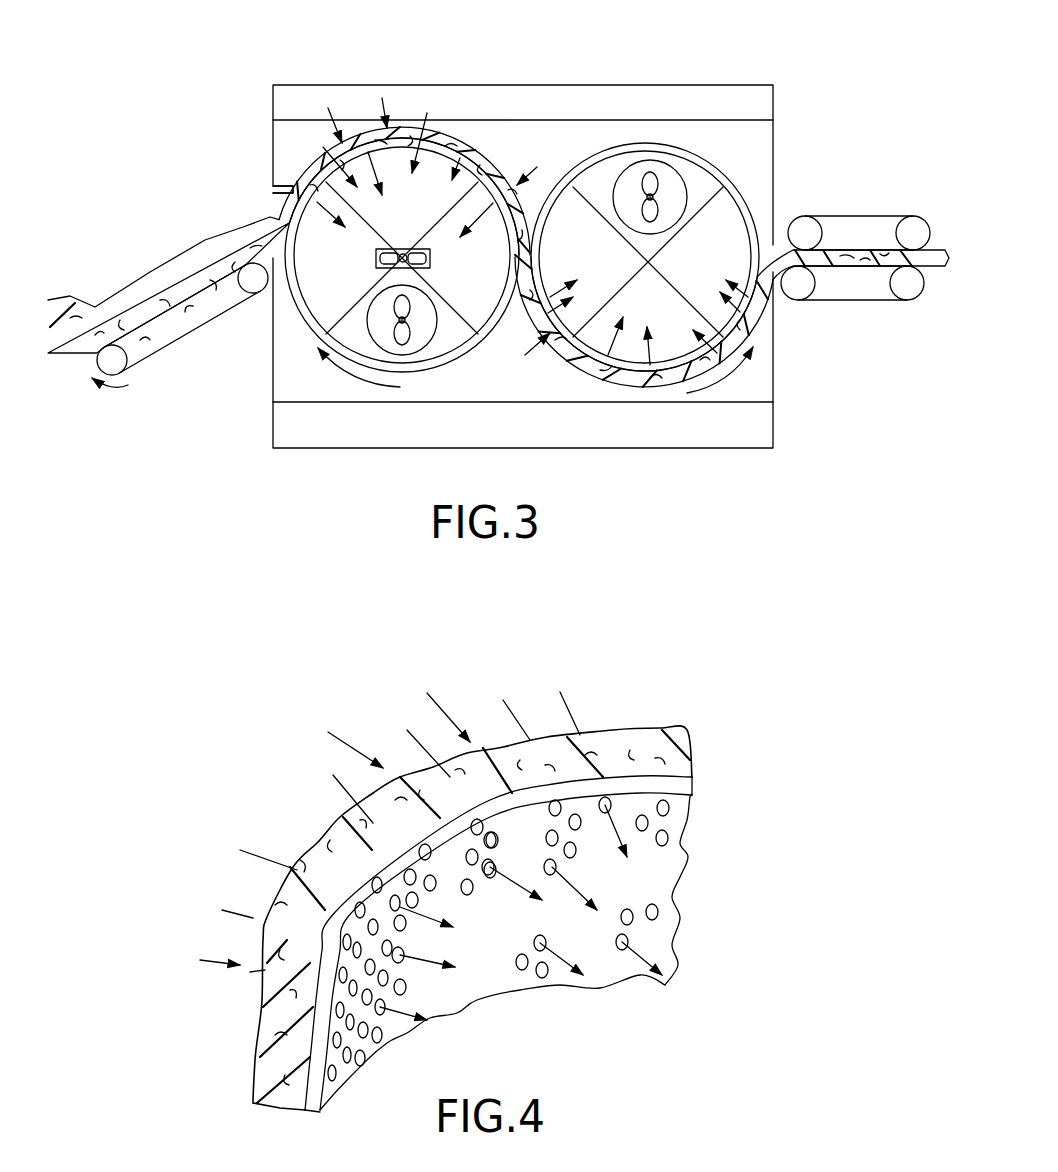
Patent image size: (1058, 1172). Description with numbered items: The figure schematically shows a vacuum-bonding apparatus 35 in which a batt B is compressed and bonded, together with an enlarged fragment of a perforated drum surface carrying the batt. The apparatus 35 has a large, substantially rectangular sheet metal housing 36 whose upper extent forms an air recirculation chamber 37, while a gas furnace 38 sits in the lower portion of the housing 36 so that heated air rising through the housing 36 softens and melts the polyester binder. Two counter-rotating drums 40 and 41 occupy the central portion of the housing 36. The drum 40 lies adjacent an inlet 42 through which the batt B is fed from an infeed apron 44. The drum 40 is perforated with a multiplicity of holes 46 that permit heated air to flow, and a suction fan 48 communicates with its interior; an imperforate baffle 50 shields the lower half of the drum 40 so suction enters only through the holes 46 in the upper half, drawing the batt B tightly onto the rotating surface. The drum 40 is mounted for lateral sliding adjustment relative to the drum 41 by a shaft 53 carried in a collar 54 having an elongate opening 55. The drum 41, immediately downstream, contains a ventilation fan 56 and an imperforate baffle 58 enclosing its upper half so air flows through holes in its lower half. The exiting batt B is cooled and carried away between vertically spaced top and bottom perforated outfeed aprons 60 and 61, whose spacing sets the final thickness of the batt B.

In FIG. 3, the vacuum-bonding apparatus 35 is at (660, 78).
In FIG. 3, the sheet metal housing 36 is at (773, 148).
In FIG. 3, the air recirculation chamber 37 is at (585, 100).
In FIG. 3, the gas furnace 38 is at (650, 423).
In FIG. 3, the drum 40 is at (310, 320).
In FIG. 4, the drum 40 is at (490, 983).
In FIG. 3, the drum 41 is at (760, 207).
In FIG. 3, the inlet 42 is at (270, 200).
In FIG. 3, the infeed apron 44 is at (200, 325).
In FIG. 4, the holes 46 is at (652, 912).
In FIG. 3, the suction fan 48 is at (420, 337).
In FIG. 3, the imperforate baffle 50 is at (457, 340).
In FIG. 3, the shaft 53 is at (401, 248).
In FIG. 3, the collar 54 is at (432, 267).
In FIG. 3, the elongate opening 55 is at (377, 267).
In FIG. 3, the ventilation fan 56 is at (665, 185).
In FIG. 3, the imperforate baffle 58 is at (717, 170).
In FIG. 3, the top perforated outfeed apron 60 is at (885, 216).
In FIG. 3, the bottom perforated outfeed apron 61 is at (883, 300).
In FIG. 3, the batt B is at (125, 275).
In FIG. 4, the batt B is at (617, 727).